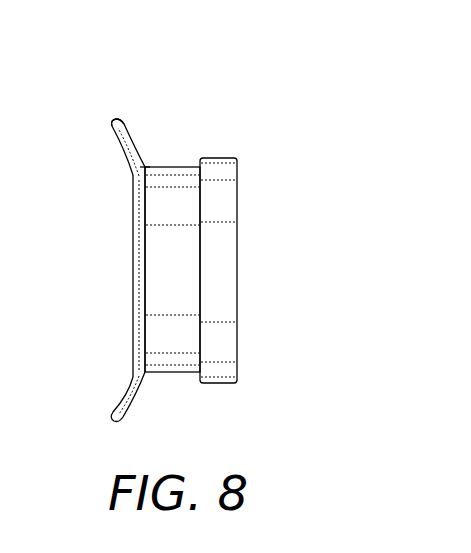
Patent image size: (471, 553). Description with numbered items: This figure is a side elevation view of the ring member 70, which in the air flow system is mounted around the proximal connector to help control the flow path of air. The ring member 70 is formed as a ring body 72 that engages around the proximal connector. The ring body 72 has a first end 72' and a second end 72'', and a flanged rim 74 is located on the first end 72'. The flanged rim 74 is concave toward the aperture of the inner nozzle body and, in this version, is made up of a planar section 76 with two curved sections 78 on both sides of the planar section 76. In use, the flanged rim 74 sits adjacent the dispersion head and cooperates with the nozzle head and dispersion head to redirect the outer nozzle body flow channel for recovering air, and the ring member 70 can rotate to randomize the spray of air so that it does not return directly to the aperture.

The ring member 70 is at (272, 162).
The ring body 72 is at (197, 298).
The first end 72' is at (265, 270).
The second end 72'' is at (190, 138).
The flanged rim 74 is at (113, 121).
The planar section 76 is at (132, 258).
The curved sections 78 is at (121, 149).